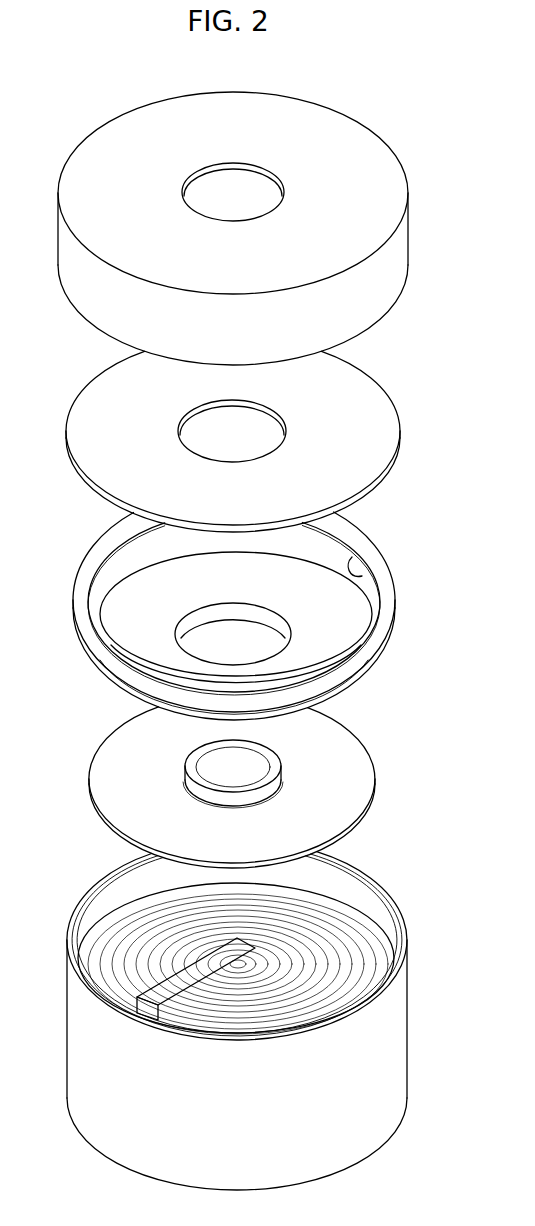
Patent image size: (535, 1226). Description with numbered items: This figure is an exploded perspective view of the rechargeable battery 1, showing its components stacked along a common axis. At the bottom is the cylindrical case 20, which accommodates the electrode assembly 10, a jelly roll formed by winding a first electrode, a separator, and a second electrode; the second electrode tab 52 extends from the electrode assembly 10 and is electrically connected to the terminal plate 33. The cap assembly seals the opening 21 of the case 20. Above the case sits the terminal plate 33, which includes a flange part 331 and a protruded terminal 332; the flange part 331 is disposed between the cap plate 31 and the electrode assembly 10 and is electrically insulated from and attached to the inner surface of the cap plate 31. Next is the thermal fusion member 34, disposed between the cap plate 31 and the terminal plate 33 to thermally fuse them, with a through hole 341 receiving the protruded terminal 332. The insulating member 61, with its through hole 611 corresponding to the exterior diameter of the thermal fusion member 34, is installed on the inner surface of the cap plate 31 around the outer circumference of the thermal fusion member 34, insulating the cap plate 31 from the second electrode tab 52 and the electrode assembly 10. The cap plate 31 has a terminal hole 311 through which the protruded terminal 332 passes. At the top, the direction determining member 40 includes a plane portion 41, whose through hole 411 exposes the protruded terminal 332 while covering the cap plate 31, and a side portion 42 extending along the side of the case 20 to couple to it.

The rechargeable battery 1 is at (77, 88).
The direction determining member 40 is at (282, 207).
The plane portion 41 is at (265, 172).
The side portion 42 is at (471, 180).
The through hole 411 is at (233, 163).
The cap plate 31 is at (259, 441).
The terminal hole 311 is at (277, 410).
The insulating member 61 is at (265, 612).
The through hole 611 is at (358, 556).
The thermal fusion member 34 is at (207, 636).
The through hole 341 is at (195, 610).
The terminal plate 33 is at (281, 787).
The flange part 331 is at (358, 772).
The protruded terminal 332 is at (245, 760).
The case 20 is at (240, 1009).
The opening 21 is at (122, 877).
The electrode assembly 10 is at (338, 917).
The second electrode tab 52 is at (165, 987).